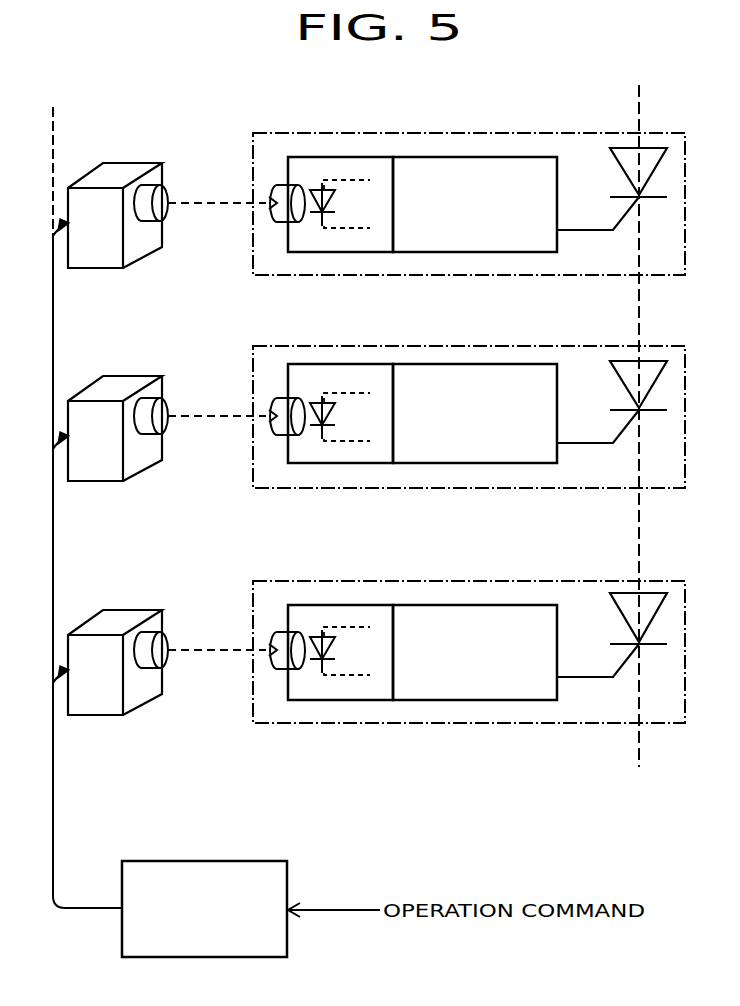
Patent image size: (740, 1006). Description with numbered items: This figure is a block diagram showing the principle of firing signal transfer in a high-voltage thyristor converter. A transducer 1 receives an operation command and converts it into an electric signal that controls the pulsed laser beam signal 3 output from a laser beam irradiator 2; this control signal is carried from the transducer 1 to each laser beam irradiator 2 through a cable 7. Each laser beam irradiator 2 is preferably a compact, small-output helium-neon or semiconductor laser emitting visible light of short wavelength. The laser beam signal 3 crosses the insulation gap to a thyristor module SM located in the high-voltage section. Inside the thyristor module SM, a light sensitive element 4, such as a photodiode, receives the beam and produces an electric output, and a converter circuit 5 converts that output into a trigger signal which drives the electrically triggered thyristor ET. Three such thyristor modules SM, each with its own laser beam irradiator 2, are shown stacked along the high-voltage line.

The transducer 1 is at (185, 861).
The laser beam irradiator 2 is at (142, 243).
The laser beam signal 3 is at (194, 205).
The light sensitive element 4 is at (352, 158).
The converter circuit 5 is at (432, 158).
The cable 7 is at (95, 908).
The thyristor module SM is at (545, 135).
The electrically triggered thyristor ET is at (622, 173).